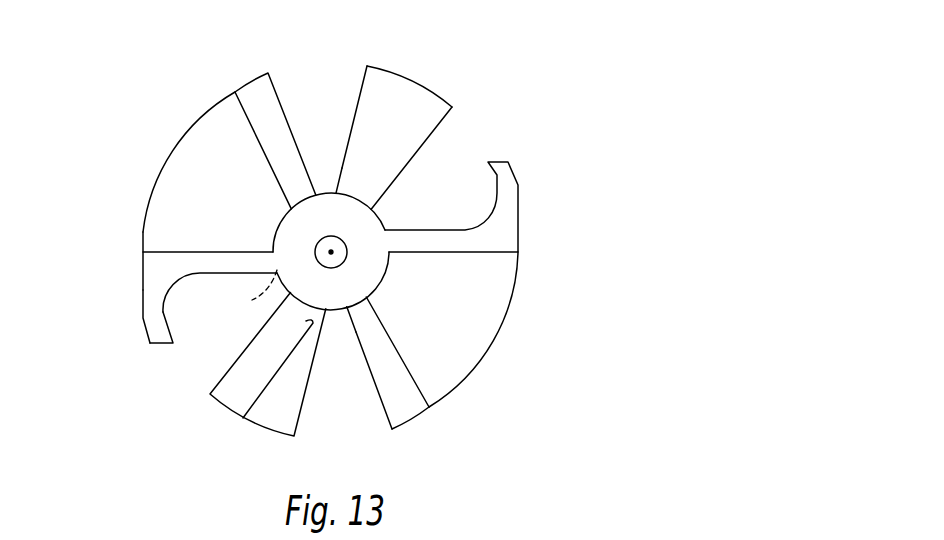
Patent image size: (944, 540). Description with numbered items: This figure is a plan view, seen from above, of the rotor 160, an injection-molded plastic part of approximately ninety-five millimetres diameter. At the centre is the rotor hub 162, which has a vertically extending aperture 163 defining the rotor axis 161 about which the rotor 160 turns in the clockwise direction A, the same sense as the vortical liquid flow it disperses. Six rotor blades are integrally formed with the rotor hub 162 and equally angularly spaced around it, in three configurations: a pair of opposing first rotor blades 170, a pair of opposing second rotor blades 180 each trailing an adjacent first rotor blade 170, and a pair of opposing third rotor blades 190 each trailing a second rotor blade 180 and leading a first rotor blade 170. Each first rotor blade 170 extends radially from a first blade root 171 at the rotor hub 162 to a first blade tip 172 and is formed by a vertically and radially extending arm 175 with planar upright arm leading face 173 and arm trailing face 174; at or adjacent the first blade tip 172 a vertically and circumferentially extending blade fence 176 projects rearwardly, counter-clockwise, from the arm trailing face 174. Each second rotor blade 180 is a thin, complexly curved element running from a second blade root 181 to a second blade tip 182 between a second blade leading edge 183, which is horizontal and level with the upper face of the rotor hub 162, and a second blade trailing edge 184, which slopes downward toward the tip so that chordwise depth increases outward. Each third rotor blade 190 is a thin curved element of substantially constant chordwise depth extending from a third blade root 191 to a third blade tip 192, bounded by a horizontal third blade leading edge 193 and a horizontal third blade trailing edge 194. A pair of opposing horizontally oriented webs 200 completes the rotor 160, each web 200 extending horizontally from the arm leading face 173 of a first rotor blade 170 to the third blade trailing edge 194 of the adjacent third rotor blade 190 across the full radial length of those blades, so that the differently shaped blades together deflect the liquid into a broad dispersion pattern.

The rotor 160 is at (54, 134).
The rotor axis 161 is at (347, 252).
The rotor hub 162 is at (378, 214).
The vertically extending aperture 163 is at (315, 246).
The first rotor blade 170 is at (320, 284).
The first blade root 171 is at (252, 296).
The first blade tip 172 is at (142, 287).
The arm leading face 173 is at (140, 234).
The arm trailing face 174 is at (202, 277).
The arm 175 is at (192, 258).
The blade fence 176 is at (143, 322).
The second rotor blade 180 is at (327, 246).
The second blade root 181 is at (337, 186).
The second blade tip 182 is at (378, 67).
The second blade leading edge 183 is at (433, 140).
The second blade trailing edge 184 is at (350, 115).
The third rotor blade 190 is at (340, 247).
The third blade root 191 is at (352, 312).
The third blade tip 192 is at (387, 437).
The third blade leading edge 193 is at (368, 372).
The third blade trailing edge 194 is at (397, 348).
The web 200 is at (148, 180).
The clockwise direction A is at (545, 117).